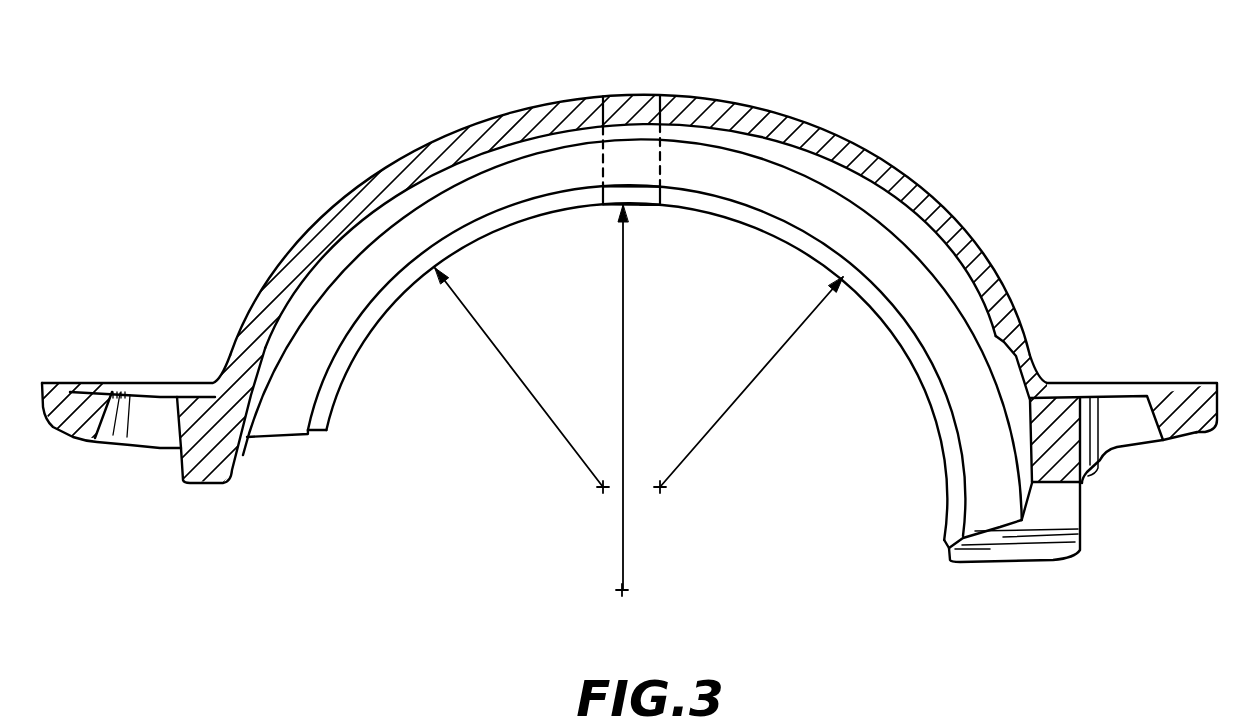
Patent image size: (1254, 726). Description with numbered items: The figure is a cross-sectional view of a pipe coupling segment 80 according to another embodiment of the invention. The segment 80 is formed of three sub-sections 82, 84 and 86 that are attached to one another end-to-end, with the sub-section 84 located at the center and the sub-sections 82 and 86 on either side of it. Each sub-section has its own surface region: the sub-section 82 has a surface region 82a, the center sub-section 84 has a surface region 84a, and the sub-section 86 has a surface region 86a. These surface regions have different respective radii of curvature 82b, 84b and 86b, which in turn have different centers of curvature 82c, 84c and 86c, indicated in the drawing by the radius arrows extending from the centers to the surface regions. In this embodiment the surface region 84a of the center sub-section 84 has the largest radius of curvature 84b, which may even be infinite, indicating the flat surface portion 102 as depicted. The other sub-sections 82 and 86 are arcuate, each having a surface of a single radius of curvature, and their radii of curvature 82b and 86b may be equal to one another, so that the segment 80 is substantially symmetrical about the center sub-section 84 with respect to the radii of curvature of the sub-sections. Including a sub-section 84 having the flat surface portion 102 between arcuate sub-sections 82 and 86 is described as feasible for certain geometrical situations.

The segment 80 is at (895, 170).
The sub-section 82 is at (317, 220).
The surface region 82a is at (342, 382).
The radius of curvature 82b is at (473, 313).
The center of curvature 82c is at (598, 489).
The sub-section 84 is at (651, 94).
The surface region 84a is at (637, 206).
The radius of curvature 84b is at (627, 552).
The center of curvature 84c is at (626, 592).
The sub-section 86 is at (1008, 293).
The surface region 86a is at (948, 475).
The radius of curvature 86b is at (769, 370).
The center of curvature 86c is at (664, 489).
The flat surface portion 102 is at (650, 206).